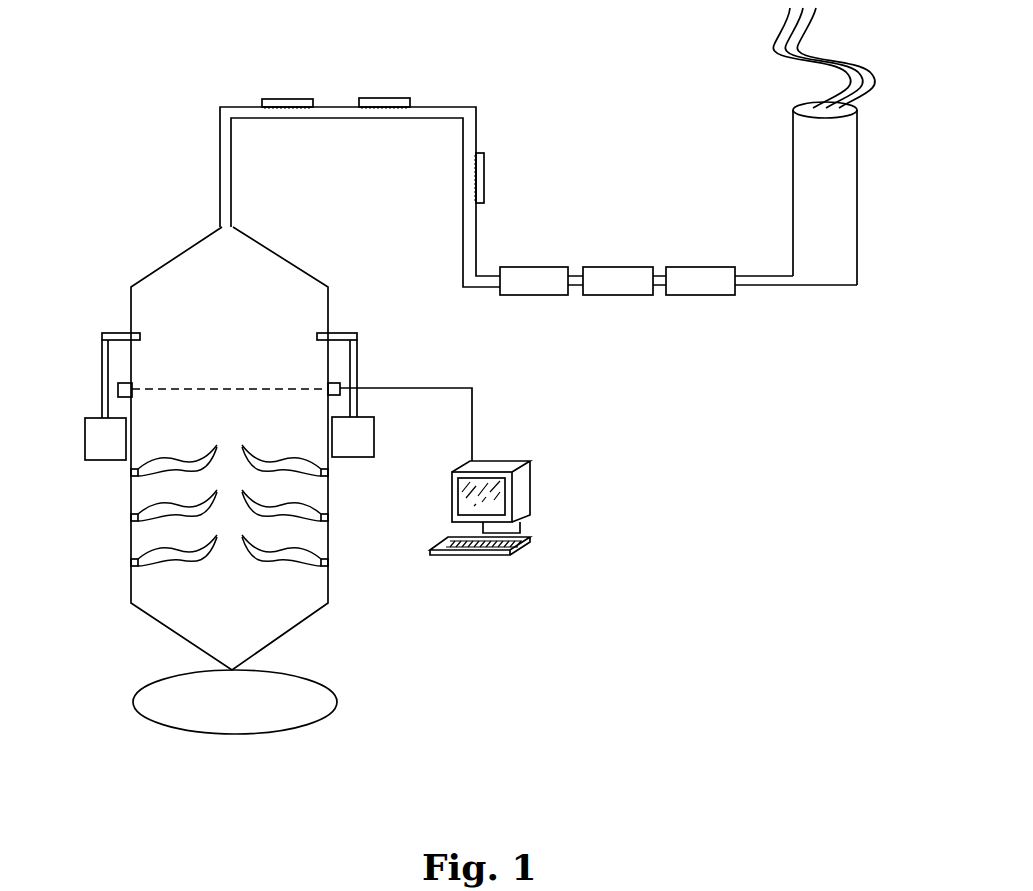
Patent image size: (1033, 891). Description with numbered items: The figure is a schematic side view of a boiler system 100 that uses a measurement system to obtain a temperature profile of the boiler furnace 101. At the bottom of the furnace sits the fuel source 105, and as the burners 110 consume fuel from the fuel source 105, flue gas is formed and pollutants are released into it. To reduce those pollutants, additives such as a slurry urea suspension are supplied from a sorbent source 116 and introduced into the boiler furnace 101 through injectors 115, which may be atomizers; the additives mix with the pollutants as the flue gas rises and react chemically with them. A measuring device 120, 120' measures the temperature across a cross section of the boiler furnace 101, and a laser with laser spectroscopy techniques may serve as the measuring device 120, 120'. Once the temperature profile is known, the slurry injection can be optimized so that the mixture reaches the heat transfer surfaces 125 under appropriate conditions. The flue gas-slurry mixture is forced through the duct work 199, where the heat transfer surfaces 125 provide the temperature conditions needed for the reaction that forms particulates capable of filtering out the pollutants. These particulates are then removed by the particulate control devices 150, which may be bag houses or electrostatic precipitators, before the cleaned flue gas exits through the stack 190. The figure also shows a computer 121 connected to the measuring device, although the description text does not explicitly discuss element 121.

The boiler system 100 is at (108, 74).
The boiler furnace 101 is at (245, 322).
The fuel source 105 is at (251, 712).
The burners 110 is at (125, 562).
The injectors 115 is at (128, 333).
The sorbent source 116 is at (85, 440).
The measuring device 120 is at (195, 371).
The measuring device 120' is at (365, 368).
The computer / controller 121 is at (522, 493).
The heat transfer surfaces 125 is at (284, 99).
The particulate control devices 150 is at (735, 257).
The stack 190 is at (857, 168).
The duct work 199 is at (220, 165).